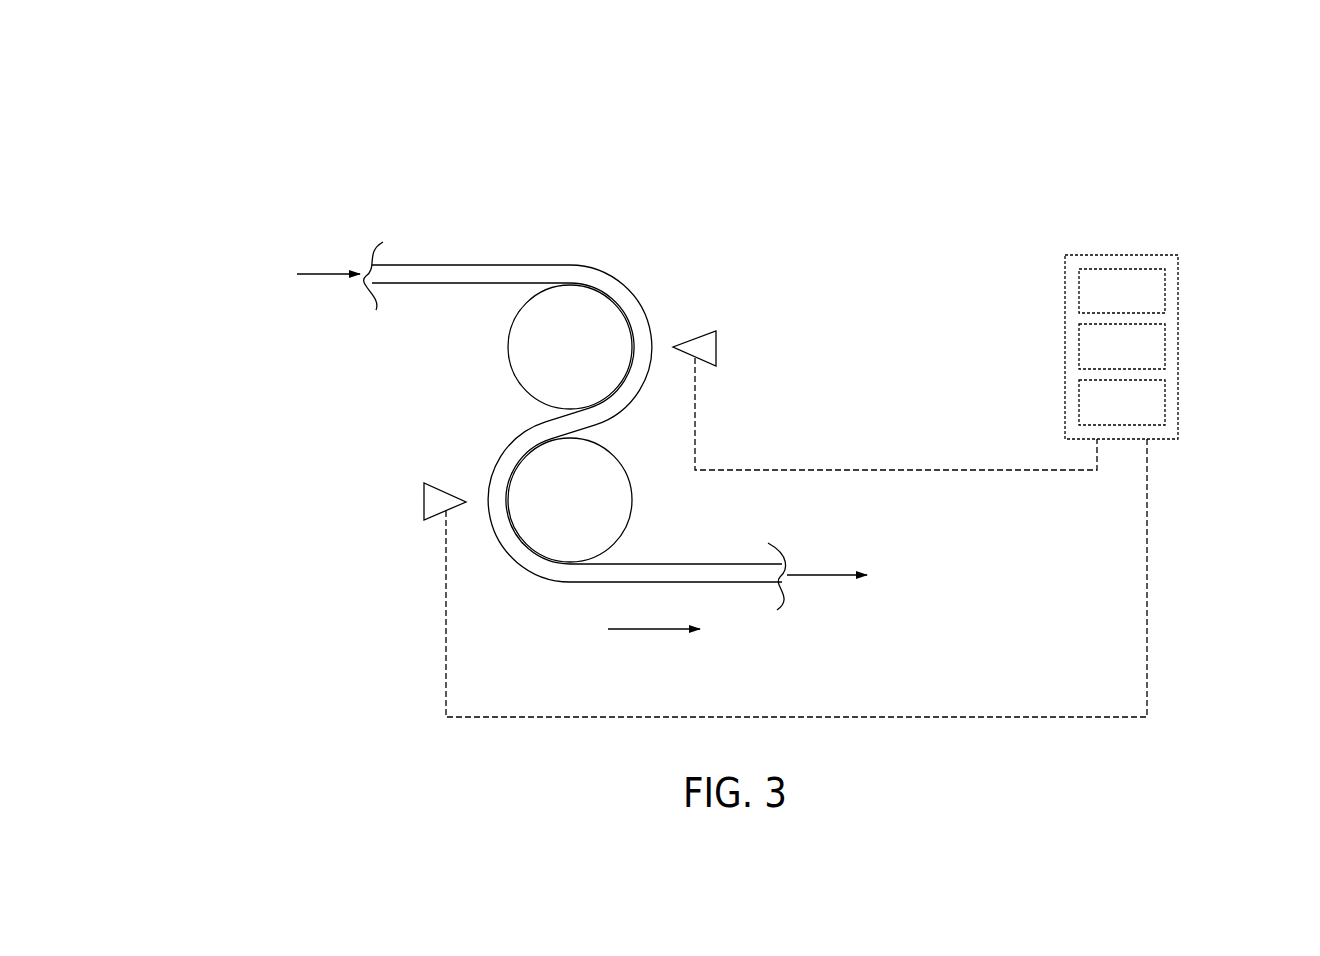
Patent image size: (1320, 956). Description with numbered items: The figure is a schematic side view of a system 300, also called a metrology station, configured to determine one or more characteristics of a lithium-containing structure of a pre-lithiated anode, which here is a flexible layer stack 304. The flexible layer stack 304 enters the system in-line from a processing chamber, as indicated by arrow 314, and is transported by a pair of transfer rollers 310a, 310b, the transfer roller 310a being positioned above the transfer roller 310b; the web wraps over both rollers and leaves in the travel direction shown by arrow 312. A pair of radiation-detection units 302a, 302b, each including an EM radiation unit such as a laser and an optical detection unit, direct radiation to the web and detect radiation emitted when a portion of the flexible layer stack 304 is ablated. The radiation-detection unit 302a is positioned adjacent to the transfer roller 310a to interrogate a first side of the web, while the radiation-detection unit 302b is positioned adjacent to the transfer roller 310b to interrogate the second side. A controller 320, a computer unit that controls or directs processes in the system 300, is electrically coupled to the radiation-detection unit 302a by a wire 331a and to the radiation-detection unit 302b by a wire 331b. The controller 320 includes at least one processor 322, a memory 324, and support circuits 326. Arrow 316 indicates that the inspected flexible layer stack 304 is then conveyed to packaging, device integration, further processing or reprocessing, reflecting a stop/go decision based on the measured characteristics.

The system 300 is at (231, 128).
The flexible layer stack 304 is at (447, 264).
The arrow 314 is at (313, 274).
The arrow 316 is at (833, 574).
The arrow 312 is at (662, 632).
The transfer roller 310a is at (543, 360).
The transfer roller 310b is at (543, 512).
The radiation-detection unit 302a is at (698, 331).
The radiation-detection unit 302b is at (440, 483).
The wire 331a is at (987, 470).
The wire 331b is at (1147, 510).
The controller 320 is at (1178, 293).
The processor 322 is at (1102, 303).
The memory 324 is at (1102, 360).
The support circuits 326 is at (1102, 412).